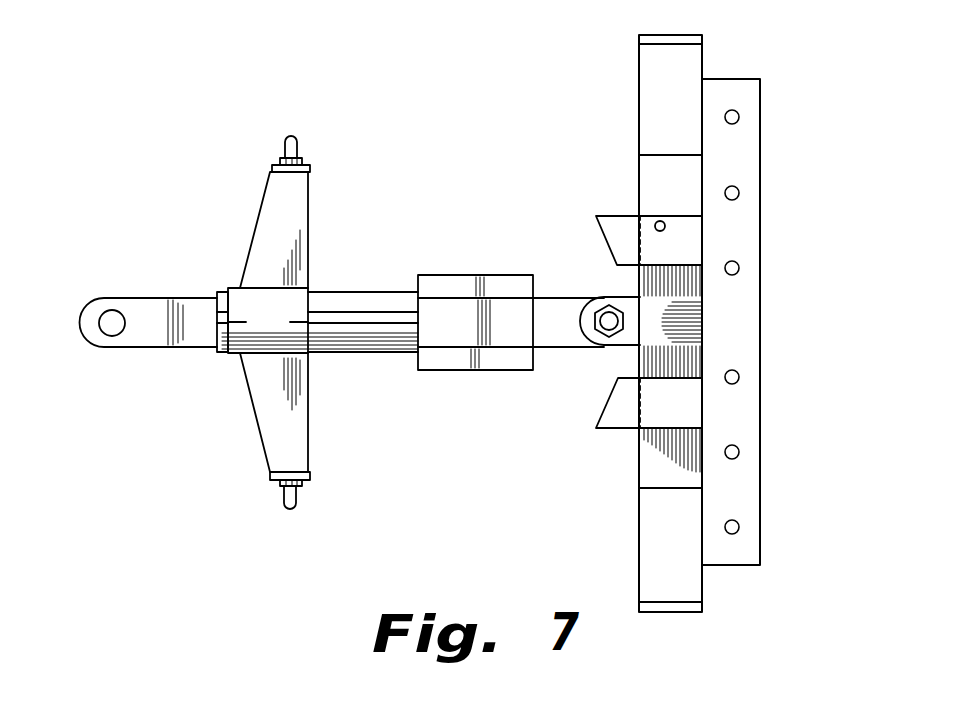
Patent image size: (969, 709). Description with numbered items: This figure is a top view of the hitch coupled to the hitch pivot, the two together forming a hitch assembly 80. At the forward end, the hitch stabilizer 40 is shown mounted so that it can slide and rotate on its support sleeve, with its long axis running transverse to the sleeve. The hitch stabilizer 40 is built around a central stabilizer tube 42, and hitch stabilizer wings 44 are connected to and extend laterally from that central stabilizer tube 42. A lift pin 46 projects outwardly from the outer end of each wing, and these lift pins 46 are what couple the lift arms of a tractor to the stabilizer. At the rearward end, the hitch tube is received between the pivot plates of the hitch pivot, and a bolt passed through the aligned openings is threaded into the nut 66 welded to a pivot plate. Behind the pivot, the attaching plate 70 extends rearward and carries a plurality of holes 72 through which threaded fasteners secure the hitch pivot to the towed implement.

The hitch stabilizer 40 is at (229, 225).
The central stabilizer tube 42 is at (224, 355).
The hitch stabilizer wings 44 is at (290, 206).
The lift pin 46 is at (298, 140).
The nut 66 is at (601, 346).
The attaching plate 70 is at (762, 100).
The holes 72 is at (739, 196).
The hitch assembly 80 is at (486, 176).